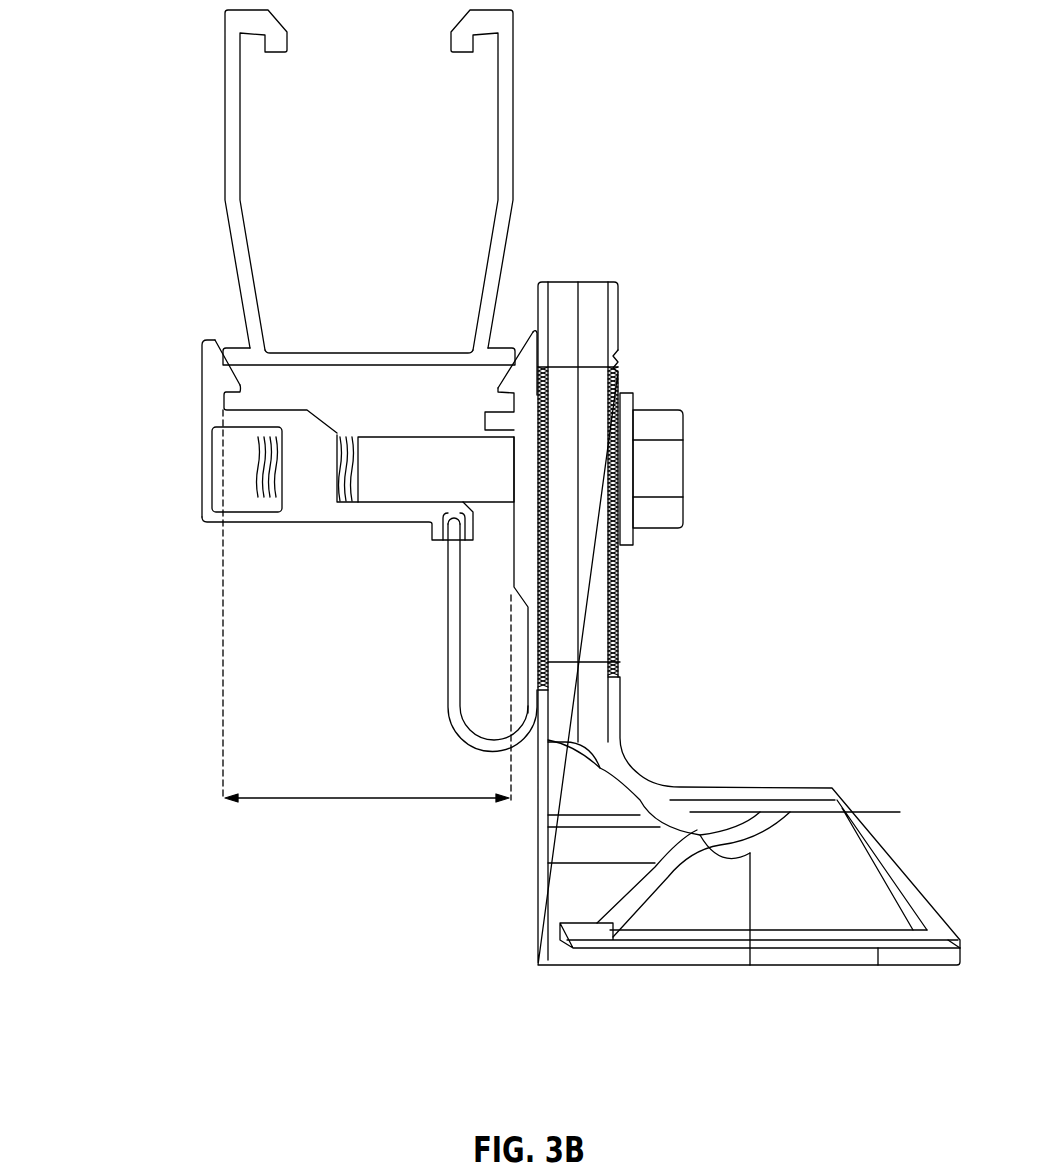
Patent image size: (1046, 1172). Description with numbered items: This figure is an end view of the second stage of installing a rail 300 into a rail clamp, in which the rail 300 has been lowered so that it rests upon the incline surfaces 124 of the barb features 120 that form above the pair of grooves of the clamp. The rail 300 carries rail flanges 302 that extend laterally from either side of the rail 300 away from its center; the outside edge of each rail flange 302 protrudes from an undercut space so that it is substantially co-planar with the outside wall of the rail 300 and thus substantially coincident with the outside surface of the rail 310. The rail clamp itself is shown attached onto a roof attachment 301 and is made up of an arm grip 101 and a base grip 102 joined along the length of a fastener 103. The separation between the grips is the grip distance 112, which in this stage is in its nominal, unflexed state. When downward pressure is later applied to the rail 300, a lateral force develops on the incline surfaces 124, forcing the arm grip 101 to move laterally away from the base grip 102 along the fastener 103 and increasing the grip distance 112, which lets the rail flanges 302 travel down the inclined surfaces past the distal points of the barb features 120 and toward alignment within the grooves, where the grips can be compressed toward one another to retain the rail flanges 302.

The outside surface of the rail 310 is at (212, 80).
The rail 300 is at (503, 83).
The rail flanges 302 is at (243, 348).
The incline surfaces 124 is at (222, 347).
The barb features 120 is at (212, 365).
The arm grip 101 is at (308, 522).
The base grip 102 is at (527, 577).
The fastener 103 is at (660, 472).
The roof attachment 301 is at (590, 630).
The grip distance 112 is at (367, 606).